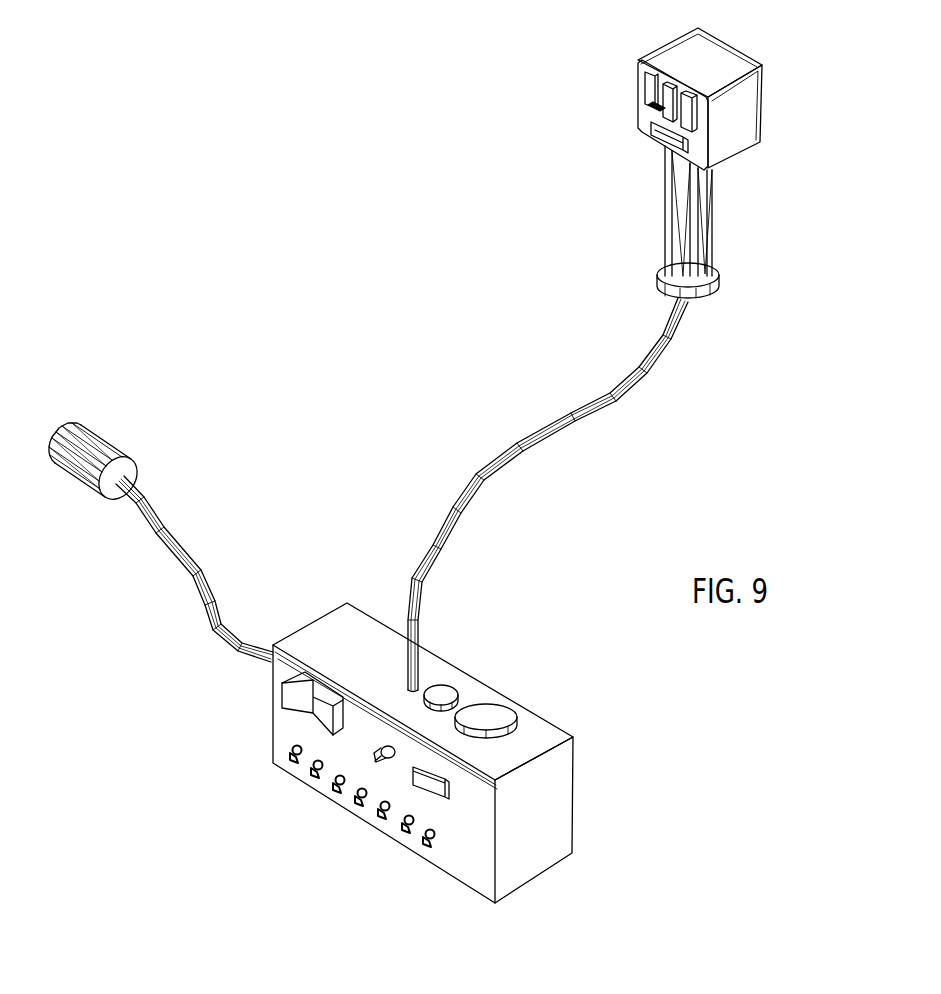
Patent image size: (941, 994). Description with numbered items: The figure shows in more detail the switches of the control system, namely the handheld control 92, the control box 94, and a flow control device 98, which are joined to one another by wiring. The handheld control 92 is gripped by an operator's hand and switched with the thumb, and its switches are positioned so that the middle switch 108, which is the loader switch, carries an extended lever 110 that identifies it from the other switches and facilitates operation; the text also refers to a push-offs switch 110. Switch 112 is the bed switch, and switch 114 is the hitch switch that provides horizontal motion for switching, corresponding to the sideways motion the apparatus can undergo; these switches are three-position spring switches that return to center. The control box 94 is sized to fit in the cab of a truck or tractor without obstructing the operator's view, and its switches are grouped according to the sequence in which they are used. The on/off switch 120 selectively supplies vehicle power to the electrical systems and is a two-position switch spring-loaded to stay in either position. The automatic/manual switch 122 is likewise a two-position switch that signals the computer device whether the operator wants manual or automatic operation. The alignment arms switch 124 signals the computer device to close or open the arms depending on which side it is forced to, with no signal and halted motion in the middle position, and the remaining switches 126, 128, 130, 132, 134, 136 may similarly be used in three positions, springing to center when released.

The handheld control 92 is at (695, 158).
The control box 94 is at (367, 748).
The flow control device 98 is at (112, 425).
The middle switch 108 is at (663, 106).
The extended lever 110 is at (653, 98).
The bed switch 112 is at (685, 115).
The hitch switch 114 is at (652, 152).
The on/off switch 120 is at (323, 680).
The automatic/manual switch 122 is at (435, 787).
The alignment arms switch 124 is at (278, 743).
The switch 126 is at (295, 782).
The switch 128 is at (323, 798).
The switch 130 is at (345, 813).
The switch 132 is at (368, 827).
The switch 134 is at (392, 842).
The switch 136 is at (418, 857).